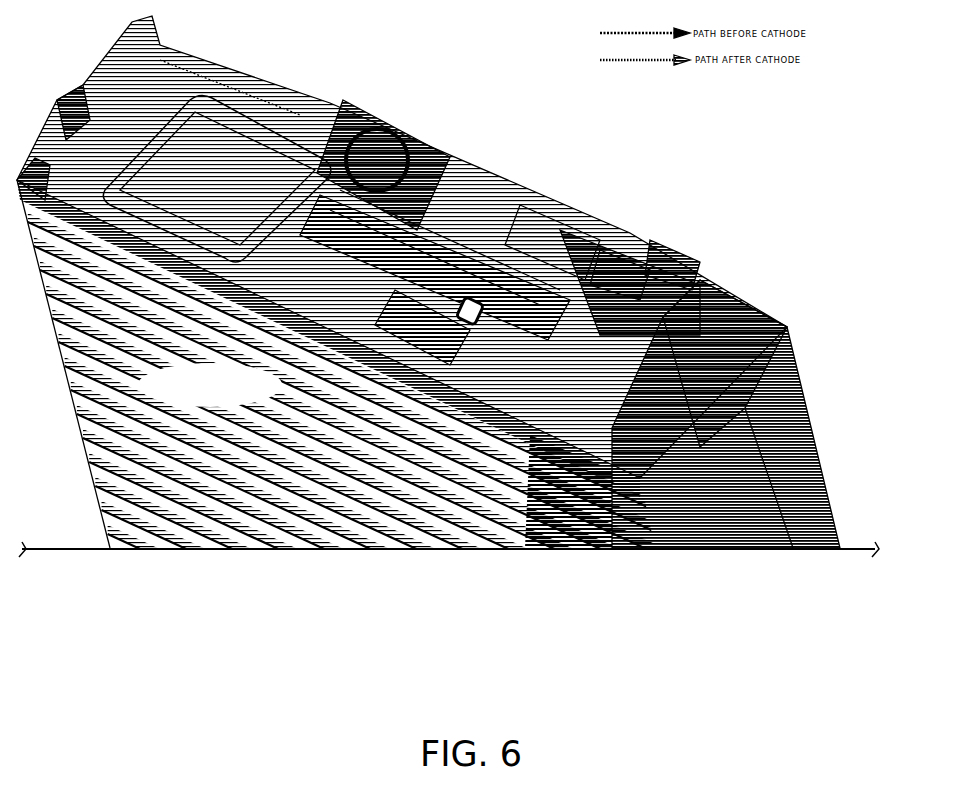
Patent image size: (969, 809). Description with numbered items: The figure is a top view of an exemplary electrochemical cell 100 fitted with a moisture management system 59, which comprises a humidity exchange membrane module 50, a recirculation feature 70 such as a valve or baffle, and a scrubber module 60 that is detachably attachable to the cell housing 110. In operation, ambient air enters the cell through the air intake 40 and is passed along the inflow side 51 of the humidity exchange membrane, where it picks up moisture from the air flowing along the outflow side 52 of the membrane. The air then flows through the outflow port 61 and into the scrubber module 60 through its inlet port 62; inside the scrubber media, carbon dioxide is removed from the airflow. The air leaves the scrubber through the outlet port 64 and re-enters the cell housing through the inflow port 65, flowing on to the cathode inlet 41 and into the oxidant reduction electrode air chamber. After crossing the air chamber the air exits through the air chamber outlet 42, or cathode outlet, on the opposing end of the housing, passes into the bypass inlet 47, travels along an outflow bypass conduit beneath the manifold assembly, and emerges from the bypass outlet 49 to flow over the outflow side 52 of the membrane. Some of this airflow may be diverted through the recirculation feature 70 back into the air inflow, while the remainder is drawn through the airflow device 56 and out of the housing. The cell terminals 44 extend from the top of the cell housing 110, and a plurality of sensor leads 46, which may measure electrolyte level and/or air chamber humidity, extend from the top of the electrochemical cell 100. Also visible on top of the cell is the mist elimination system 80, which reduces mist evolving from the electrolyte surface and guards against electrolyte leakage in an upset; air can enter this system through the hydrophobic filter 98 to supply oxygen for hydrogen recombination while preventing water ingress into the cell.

The electrochemical cell 100 is at (801, 163).
The air intake 40 is at (418, 511).
The cell housing 110 is at (253, 530).
The air chamber outlet 42 is at (133, 157).
The mist elimination system 80 is at (217, 170).
The hydrophobic filter 98 is at (247, 177).
The bypass inlet 47 is at (288, 135).
The airflow device 56 is at (385, 150).
The humidity exchange membrane module 50 is at (415, 250).
The sensor leads 46 is at (483, 275).
The outflow side 52 is at (490, 300).
The bypass outlet 49 is at (553, 245).
The cell terminals 44 is at (598, 280).
The inflow port 65 is at (620, 270).
The outlet port 64 is at (660, 262).
The scrubber module 60 is at (803, 492).
The inlet port 62 is at (602, 440).
The outflow port 61 is at (560, 445).
The inflow side 51 is at (459, 330).
The recirculation feature 70 is at (420, 300).
The moisture management system 59 is at (459, 430).
The cathode inlet 41 is at (520, 368).